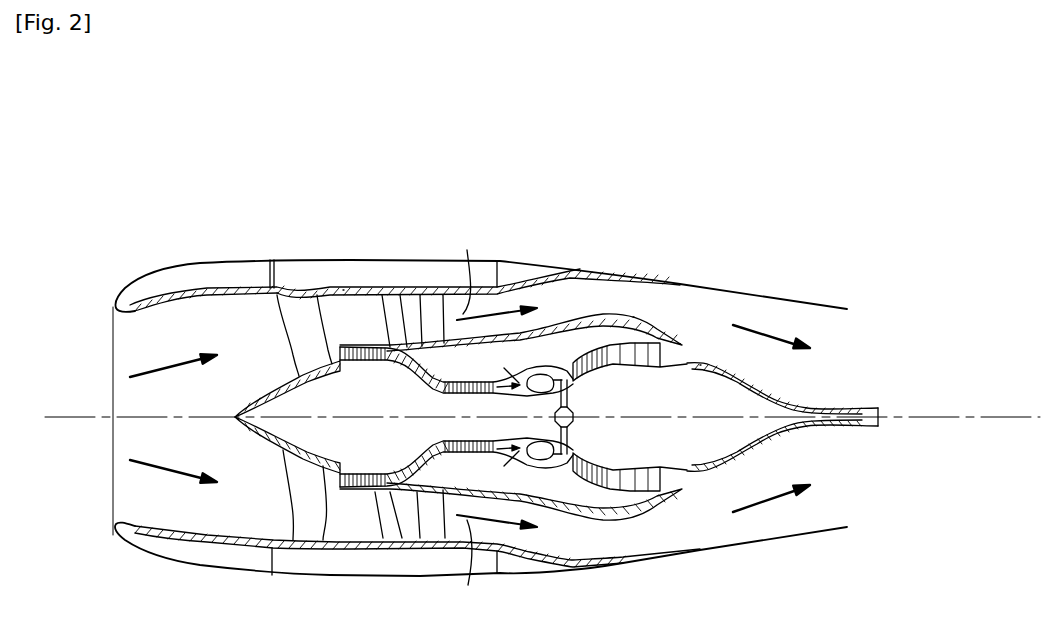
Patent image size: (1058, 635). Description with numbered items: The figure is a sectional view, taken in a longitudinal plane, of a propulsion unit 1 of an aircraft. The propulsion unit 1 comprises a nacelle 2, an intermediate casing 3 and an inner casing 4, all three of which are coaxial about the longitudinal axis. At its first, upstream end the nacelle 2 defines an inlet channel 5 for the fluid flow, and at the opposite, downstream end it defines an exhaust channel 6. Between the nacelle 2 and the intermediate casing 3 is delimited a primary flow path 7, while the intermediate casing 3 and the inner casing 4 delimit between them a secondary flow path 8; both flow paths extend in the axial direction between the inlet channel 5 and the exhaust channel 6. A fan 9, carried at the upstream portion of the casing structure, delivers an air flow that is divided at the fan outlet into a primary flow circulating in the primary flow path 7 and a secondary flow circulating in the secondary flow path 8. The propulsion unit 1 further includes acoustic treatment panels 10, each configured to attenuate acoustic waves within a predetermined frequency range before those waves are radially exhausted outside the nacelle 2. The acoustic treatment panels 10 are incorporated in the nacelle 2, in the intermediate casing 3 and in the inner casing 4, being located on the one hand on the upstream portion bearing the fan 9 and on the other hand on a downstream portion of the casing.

The propulsion unit 1 is at (659, 167).
The nacelle 2 is at (660, 274).
The intermediate casing 3 is at (553, 313).
The inner casing 4 is at (251, 389).
The inlet channel 5 is at (127, 326).
The exhaust channel 6 is at (857, 358).
The primary flow path 7 is at (428, 369).
The secondary flow path 8 is at (493, 296).
The fan 9 is at (311, 517).
The acoustic treatment panel 10 is at (277, 293).